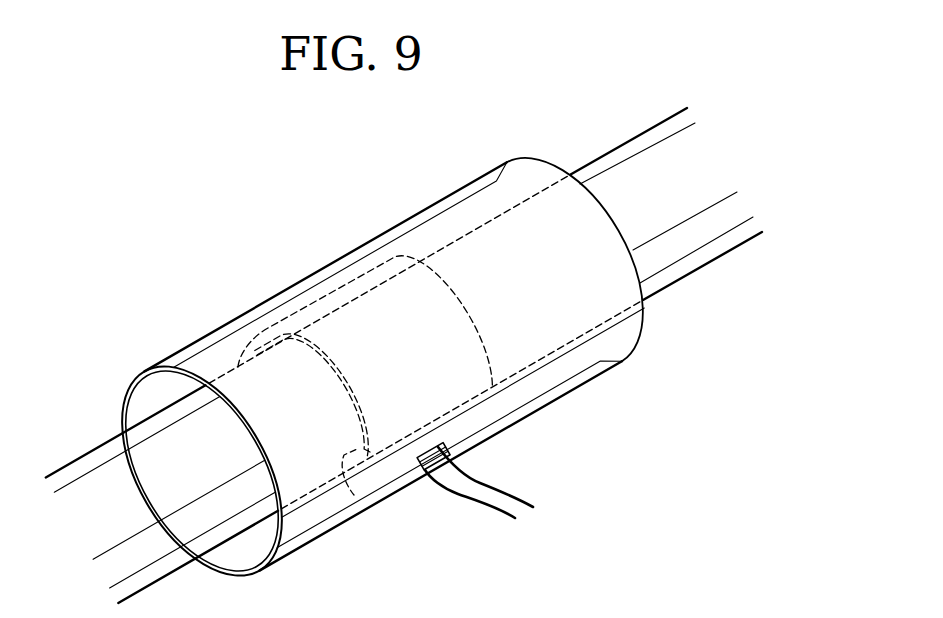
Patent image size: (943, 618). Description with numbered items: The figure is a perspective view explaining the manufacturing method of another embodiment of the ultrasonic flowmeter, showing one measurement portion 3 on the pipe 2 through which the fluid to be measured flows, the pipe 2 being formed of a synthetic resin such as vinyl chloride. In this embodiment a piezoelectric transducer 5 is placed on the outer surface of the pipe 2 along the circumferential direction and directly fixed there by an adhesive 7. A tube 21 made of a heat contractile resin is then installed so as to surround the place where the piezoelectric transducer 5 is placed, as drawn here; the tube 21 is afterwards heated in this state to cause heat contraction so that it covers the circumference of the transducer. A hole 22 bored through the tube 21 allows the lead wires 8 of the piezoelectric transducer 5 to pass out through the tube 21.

The pipe 2 is at (618, 157).
The measurement portion 3 is at (274, 196).
The tube 21 is at (212, 324).
The piezoelectric transducer 5 is at (362, 281).
The adhesive 7 is at (354, 495).
The hole 22 is at (438, 473).
The lead wires 8 is at (526, 510).